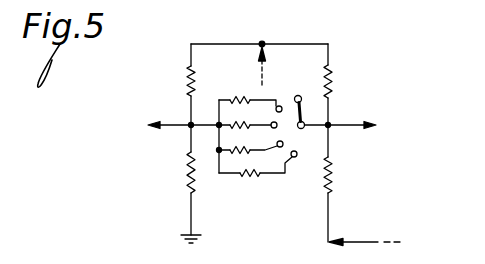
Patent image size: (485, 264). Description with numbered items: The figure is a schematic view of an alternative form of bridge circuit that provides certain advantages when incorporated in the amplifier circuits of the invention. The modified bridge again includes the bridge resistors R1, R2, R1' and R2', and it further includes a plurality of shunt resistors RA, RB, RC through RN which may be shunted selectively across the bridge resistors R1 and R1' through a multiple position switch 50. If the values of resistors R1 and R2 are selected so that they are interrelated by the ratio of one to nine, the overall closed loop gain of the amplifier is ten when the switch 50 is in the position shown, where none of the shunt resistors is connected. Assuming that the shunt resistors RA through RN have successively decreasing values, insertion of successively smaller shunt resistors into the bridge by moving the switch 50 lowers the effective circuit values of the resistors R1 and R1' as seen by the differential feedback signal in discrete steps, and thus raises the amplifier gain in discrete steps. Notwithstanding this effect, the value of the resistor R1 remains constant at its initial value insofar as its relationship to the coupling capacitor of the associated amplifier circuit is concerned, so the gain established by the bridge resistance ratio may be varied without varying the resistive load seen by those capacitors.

The bridge resistor R1 is at (176, 81).
The bridge resistor R2 is at (175, 172).
The bridge resistor R1' is at (343, 81).
The bridge resistor R2' is at (342, 175).
The shunt resistor RA is at (249, 97).
The shunt resistor RB is at (240, 124).
The shunt resistor RC is at (240, 149).
The shunt resistor RN is at (252, 176).
The multiple position switch 50 is at (307, 130).